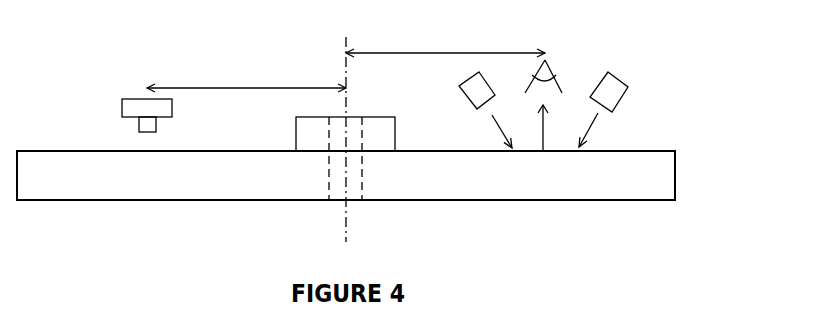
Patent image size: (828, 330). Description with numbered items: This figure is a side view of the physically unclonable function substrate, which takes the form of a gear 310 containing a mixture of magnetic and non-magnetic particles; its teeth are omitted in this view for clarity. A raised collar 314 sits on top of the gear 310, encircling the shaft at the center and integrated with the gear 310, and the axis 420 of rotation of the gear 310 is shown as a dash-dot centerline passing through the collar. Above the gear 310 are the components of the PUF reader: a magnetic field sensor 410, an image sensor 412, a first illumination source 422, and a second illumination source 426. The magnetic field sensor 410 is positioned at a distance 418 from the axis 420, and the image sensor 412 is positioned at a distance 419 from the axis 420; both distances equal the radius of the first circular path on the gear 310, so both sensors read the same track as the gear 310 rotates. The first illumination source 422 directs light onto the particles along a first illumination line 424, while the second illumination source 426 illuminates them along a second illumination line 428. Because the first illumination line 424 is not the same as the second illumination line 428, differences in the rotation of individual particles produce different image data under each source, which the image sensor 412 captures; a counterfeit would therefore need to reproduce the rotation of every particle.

The gear 310 is at (682, 163).
The raised collar 314 is at (296, 128).
The magnetic field sensor 410 is at (139, 132).
The image sensor 412 is at (548, 70).
The distance 418 is at (205, 87).
The distance 419 is at (443, 53).
The axis 420 is at (346, 222).
The first illumination source 422 is at (463, 108).
The first illumination line 424 is at (505, 133).
The second illumination source 426 is at (623, 99).
The second illumination line 428 is at (588, 126).